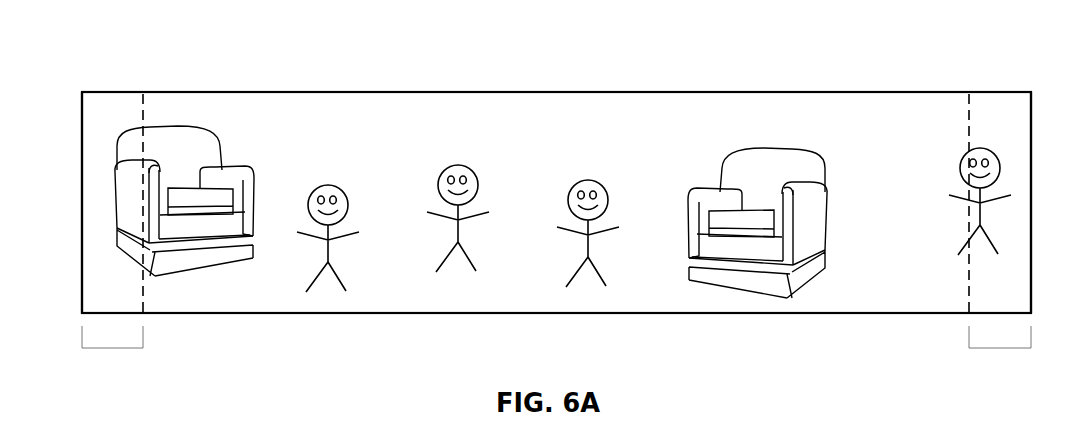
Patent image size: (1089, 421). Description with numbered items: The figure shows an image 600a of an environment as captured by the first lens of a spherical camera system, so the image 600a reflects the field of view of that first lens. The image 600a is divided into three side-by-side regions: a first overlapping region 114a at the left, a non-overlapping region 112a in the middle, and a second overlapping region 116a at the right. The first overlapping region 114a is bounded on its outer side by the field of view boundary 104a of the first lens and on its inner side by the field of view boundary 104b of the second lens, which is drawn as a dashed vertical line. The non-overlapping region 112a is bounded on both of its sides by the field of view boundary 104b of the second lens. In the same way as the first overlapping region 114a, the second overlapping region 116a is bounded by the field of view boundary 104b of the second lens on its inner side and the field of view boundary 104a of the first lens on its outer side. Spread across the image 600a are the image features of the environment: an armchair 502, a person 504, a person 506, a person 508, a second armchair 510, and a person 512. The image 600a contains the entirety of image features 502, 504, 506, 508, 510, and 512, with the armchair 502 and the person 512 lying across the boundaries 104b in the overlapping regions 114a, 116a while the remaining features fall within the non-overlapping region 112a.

The image 600a is at (562, 76).
The non-overlapping region 112a is at (556, 329).
The field of view boundary of the first lens 104a is at (82, 84).
The field of view boundary of the second lens 104b is at (143, 84).
The first overlapping region 114a is at (112, 353).
The second overlapping region 116a is at (1000, 353).
The image feature 502 is at (217, 146).
The image feature 504 is at (338, 188).
The image feature 506 is at (477, 170).
The image feature 508 is at (606, 186).
The image feature 510 is at (827, 227).
The image feature 512 is at (961, 166).